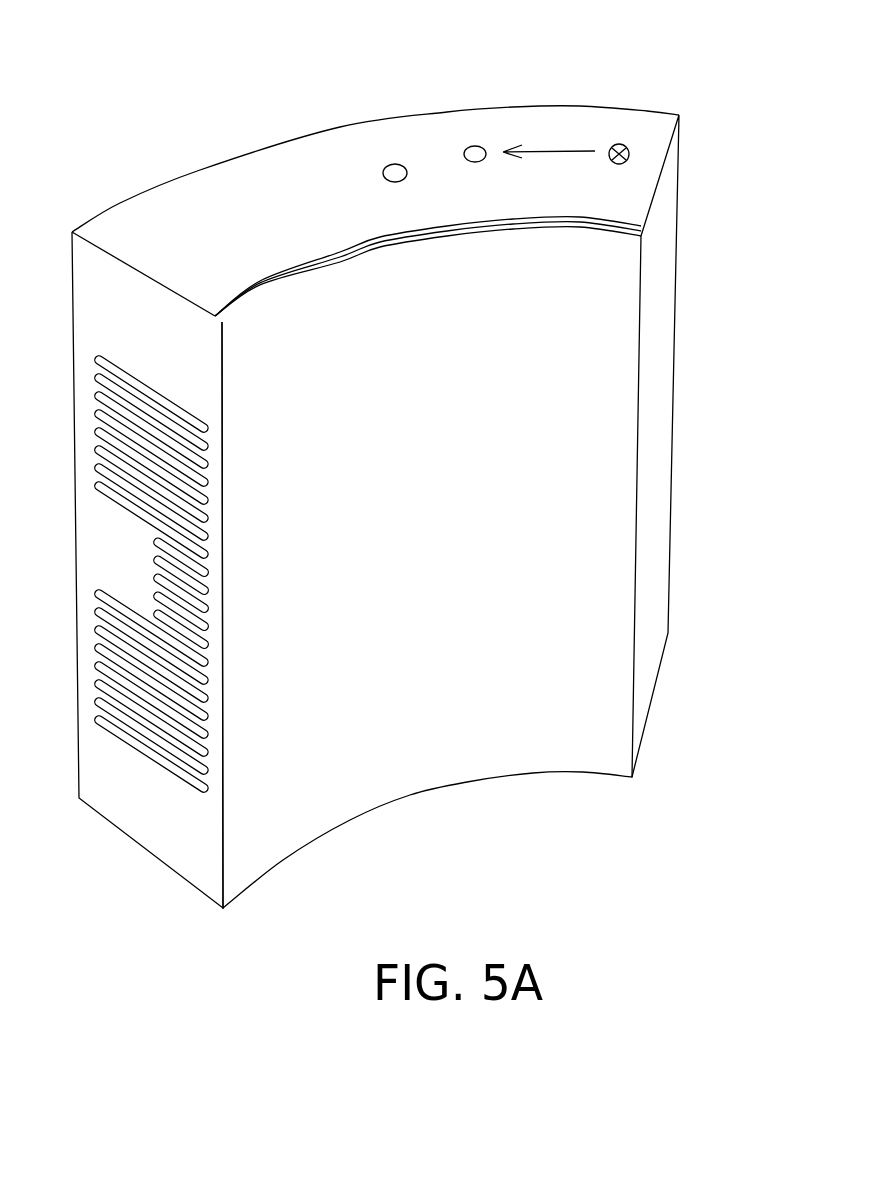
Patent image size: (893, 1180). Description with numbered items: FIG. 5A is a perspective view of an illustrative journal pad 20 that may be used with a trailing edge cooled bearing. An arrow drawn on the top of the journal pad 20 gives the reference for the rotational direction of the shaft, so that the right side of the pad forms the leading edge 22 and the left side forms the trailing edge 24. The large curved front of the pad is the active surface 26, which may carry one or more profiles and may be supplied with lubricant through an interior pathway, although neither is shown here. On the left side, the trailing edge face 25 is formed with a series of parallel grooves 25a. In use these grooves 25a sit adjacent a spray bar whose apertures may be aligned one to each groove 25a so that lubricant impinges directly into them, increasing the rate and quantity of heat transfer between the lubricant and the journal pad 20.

The journal pad 20 is at (537, 58).
The leading edge 22 is at (641, 257).
The trailing edge 24 is at (222, 348).
The trailing edge face 25 is at (158, 328).
The grooves 25a is at (208, 432).
The active surface 26 is at (464, 459).